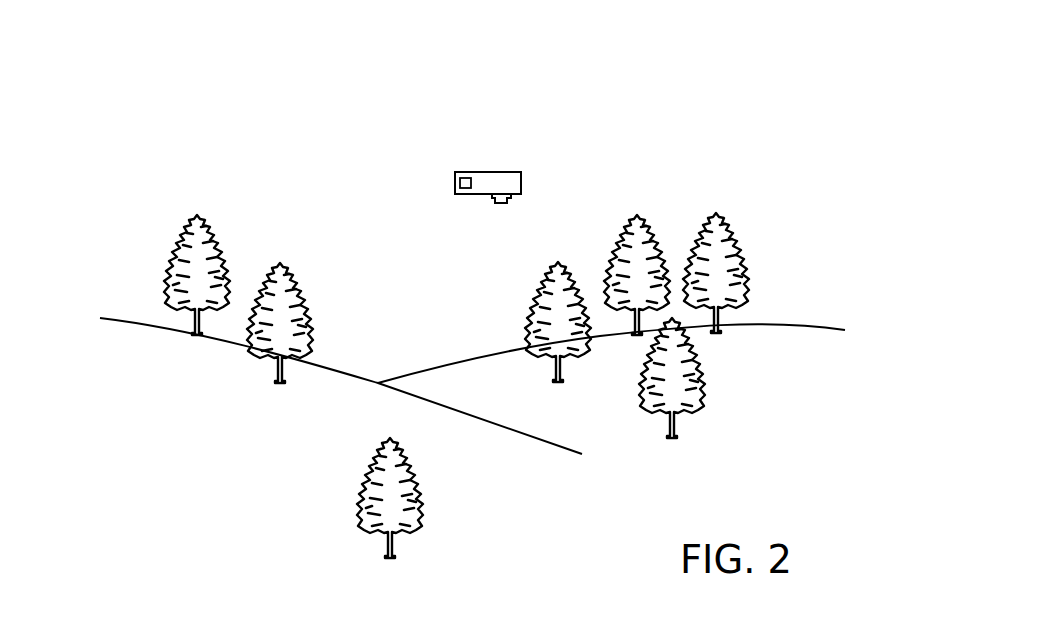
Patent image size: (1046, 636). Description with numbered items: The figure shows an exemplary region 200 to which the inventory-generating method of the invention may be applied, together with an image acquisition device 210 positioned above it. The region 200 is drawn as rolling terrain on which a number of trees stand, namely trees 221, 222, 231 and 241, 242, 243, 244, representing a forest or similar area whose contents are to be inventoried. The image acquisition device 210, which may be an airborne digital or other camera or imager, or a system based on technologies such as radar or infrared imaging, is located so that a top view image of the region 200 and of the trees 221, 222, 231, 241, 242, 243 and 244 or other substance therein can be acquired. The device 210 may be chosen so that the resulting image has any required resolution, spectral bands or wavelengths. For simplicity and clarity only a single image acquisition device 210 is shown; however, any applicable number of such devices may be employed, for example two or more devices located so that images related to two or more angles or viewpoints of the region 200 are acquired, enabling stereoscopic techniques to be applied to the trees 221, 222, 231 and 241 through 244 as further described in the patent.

The region 200 is at (240, 152).
The image acquisition device 210 is at (455, 172).
The tree 221 is at (208, 228).
The tree 222 is at (292, 276).
The tree 231 is at (372, 462).
The tree 241 is at (538, 288).
The tree 242 is at (703, 374).
The tree 243 is at (742, 232).
The tree 244 is at (625, 228).